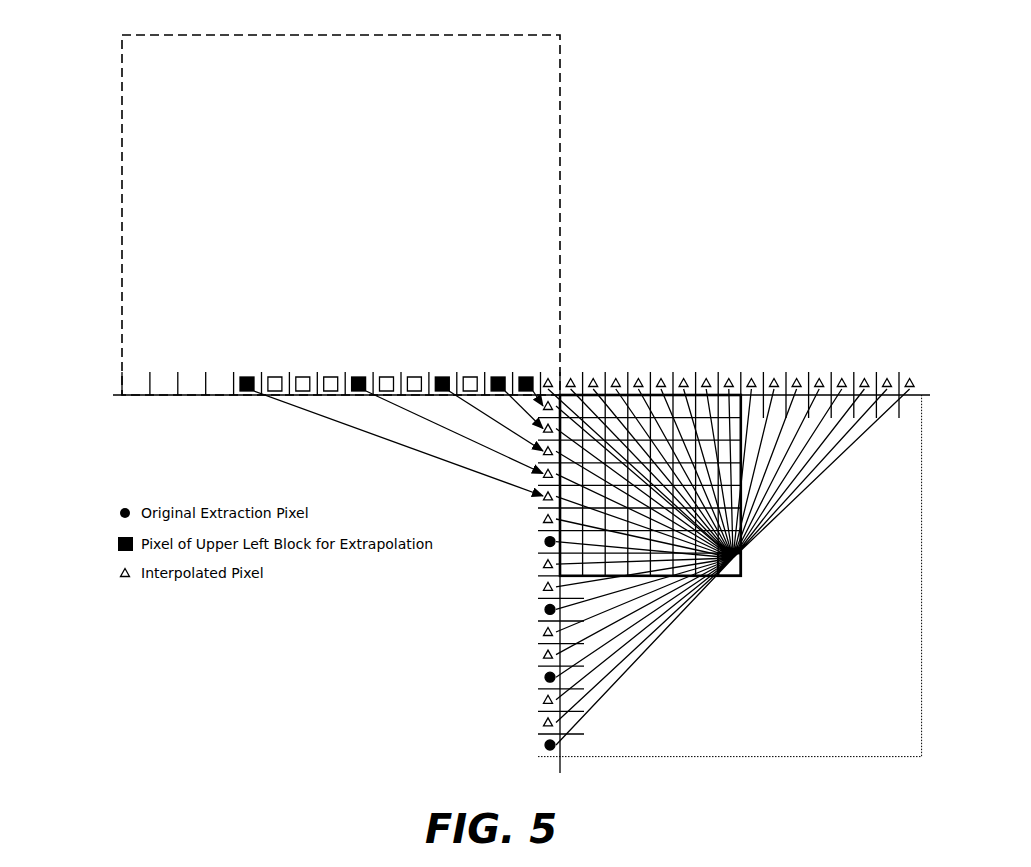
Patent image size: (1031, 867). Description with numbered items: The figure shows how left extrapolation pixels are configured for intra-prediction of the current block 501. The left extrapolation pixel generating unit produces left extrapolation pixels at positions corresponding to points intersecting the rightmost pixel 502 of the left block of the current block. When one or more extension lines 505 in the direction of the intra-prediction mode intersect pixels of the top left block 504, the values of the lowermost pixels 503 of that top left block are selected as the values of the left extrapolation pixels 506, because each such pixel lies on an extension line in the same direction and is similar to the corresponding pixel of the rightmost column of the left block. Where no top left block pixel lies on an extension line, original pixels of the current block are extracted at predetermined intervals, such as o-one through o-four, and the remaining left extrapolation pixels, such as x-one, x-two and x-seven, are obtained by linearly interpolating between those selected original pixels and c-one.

The current block 501 is at (935, 528).
The rightmost pixel of a left block 502 is at (513, 760).
The lowermost pixels of the top left block 503 is at (560, 358).
The top left block 504 is at (578, 127).
The extension lines 505 is at (340, 424).
The left extrapolation pixels 506 is at (250, 377).